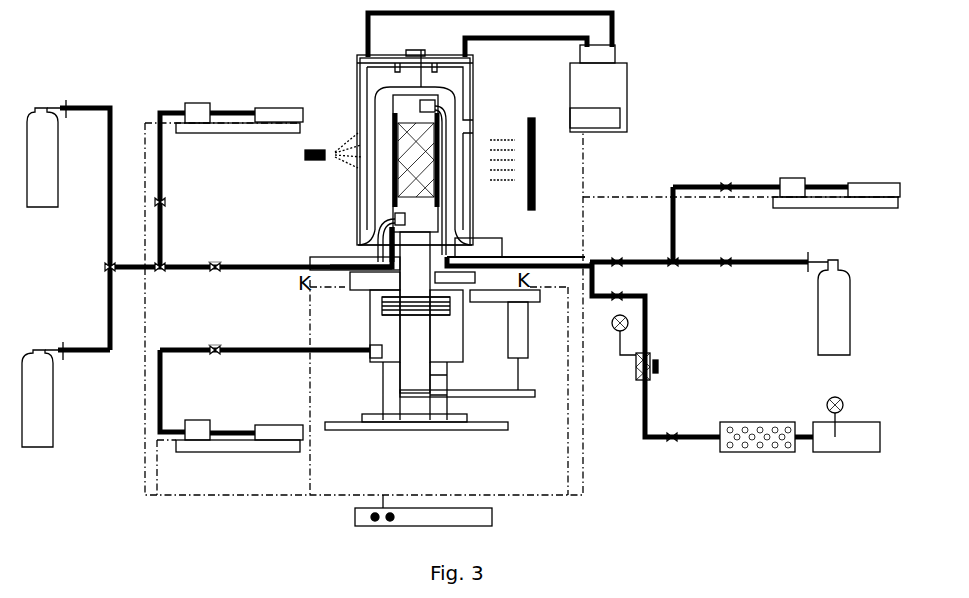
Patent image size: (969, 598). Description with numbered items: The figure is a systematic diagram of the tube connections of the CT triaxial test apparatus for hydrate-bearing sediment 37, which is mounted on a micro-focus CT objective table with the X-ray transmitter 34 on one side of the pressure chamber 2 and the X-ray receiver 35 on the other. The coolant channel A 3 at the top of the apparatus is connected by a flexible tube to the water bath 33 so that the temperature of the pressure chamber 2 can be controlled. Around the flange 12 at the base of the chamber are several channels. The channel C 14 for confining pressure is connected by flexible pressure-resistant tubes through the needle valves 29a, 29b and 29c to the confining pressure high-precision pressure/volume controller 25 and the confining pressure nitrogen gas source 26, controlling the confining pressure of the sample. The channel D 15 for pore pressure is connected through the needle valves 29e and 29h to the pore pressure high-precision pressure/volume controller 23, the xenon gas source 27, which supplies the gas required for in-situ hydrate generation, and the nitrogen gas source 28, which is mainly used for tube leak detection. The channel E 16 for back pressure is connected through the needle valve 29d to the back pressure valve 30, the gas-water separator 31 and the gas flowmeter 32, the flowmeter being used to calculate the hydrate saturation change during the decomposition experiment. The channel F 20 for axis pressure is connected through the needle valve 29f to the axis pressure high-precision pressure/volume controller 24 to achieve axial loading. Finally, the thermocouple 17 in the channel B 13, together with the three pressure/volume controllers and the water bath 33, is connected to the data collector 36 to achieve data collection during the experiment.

The pressure chamber 2 is at (368, 125).
The coolant channel A 3 is at (462, 55).
The flange 12 is at (337, 262).
The channel B thermocouple 13 is at (357, 257).
The channel C confining pressure 14 is at (478, 258).
The channel D pore pressure inlet 15 is at (362, 275).
The channel E back pressure 16 is at (485, 272).
The thermocouple 17 is at (388, 225).
The channel F axis pressure 20 is at (368, 356).
The pore pressure high-precision pressure/volume controller 23 is at (239, 134).
The axis pressure high-precision pressure/volume controller 24 is at (239, 419).
The confining pressure high-precision pressure/volume controller 25 is at (836, 180).
The confining pressure nitrogen gas source 26 is at (846, 303).
The pore pressure xenon gas source 27 is at (68, 225).
The pore pressure nitrogen gas source 28 is at (66, 394).
The needle valve 29a is at (740, 277).
The needle valve 29b is at (726, 207).
The needle valve 29c is at (631, 245).
The needle valve 29d is at (656, 349).
The needle valve 29e is at (215, 248).
The needle valve 29f is at (217, 331).
The needle valve 29h is at (178, 205).
The back pressure valve 30 is at (661, 347).
The gas-water separator 31 is at (766, 422).
The gas flowmeter 32 is at (848, 422).
The water bath 33 is at (584, 88).
The X-ray transmitter 34 is at (317, 150).
The X-ray receiver 35 is at (525, 164).
The data collector 36 is at (438, 512).
The CT triaxial test apparatus for hydrate-bearing sediment 37 is at (399, 147).